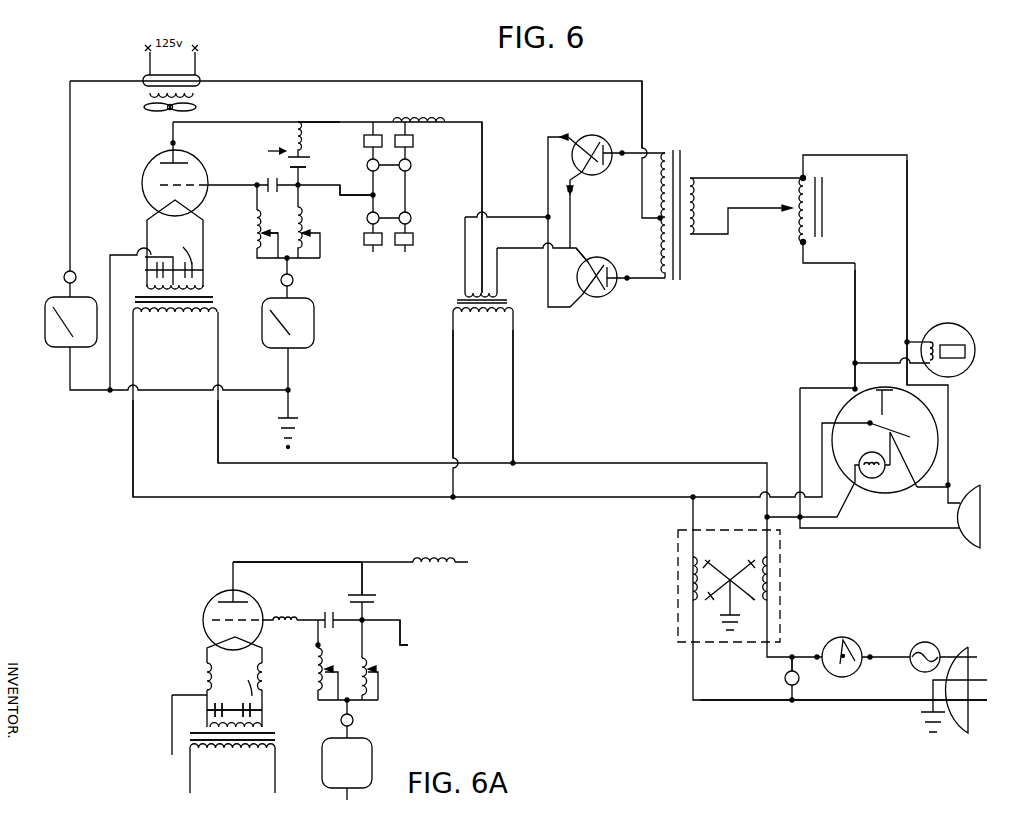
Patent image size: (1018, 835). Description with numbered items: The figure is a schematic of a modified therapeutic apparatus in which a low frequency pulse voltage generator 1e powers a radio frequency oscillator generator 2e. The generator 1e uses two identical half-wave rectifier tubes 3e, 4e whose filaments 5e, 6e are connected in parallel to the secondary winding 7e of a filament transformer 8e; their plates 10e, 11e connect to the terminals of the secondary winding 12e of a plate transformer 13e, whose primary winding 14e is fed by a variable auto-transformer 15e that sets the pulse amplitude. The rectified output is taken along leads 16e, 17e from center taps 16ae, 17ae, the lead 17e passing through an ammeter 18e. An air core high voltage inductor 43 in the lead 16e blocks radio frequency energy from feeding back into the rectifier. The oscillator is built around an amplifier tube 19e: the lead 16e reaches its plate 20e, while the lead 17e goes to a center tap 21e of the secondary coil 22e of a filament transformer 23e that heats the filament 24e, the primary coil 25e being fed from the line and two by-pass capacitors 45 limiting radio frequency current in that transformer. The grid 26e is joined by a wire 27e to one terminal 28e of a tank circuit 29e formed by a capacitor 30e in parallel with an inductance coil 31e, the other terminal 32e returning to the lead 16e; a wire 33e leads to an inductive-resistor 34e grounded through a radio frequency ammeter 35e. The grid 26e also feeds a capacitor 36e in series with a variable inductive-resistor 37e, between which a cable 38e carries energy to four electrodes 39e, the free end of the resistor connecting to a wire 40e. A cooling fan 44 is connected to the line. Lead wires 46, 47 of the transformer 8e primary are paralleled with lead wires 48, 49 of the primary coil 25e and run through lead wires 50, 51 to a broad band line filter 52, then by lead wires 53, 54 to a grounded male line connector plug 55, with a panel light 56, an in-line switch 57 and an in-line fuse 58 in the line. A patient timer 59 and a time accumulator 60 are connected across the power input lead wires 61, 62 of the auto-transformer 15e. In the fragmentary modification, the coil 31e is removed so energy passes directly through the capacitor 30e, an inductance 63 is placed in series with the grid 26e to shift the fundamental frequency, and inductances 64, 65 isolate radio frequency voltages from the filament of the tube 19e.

In FIG. 6, the low frequency pulse voltage generator 1e is at (717, 192).
In FIG. 6, the oscillator generator 2e is at (331, 181).
In FIG. 6, the half-wave rectifier tube 3e is at (609, 149).
In FIG. 6, the half-wave rectifier tube 4e is at (620, 285).
In FIG. 6, the filament 5e is at (616, 151).
In FIG. 6, the filament 6e is at (588, 251).
In FIG. 6, the secondary winding 7e is at (465, 293).
In FIG. 6, the filament transformer 8e is at (450, 310).
In FIG. 6, the plate 10e is at (598, 166).
In FIG. 6, the plate 11e is at (598, 290).
In FIG. 6, the secondary winding 12e is at (662, 248).
In FIG. 6, the plate transformer 13e is at (707, 211).
In FIG. 6, the primary winding 14e is at (698, 201).
In FIG. 6, the variable auto-transformer 15e is at (797, 241).
In FIG. 6, the lead 16e is at (483, 190).
In FIG. 6A, the lead 16e is at (300, 562).
In FIG. 6, the center tap 16ae is at (487, 295).
In FIG. 6, the lead 17e is at (643, 99).
In FIG. 6, the center tap 17ae is at (656, 225).
In FIG. 6, the ammeter 18e is at (45, 325).
In FIG. 6, the amplifier tube 19e is at (166, 204).
In FIG. 6A, the amplifier tube 19e is at (220, 612).
In FIG. 6, the plate 20e is at (186, 165).
In FIG. 6A, the plate 20e is at (245, 600).
In FIG. 6, the center tap 21e is at (147, 286).
In FIG. 6, the secondary coil 22e is at (205, 286).
In FIG. 6, the filament transformer 23e is at (216, 301).
In FIG. 6A, the filament transformer 23e is at (279, 741).
In FIG. 6, the filament 24e is at (165, 202).
In FIG. 6A, the filament 24e is at (215, 646).
In FIG. 6, the primary coil 25e is at (182, 318).
In FIG. 6, the grid 26e is at (162, 183).
In FIG. 6A, the grid 26e is at (215, 622).
In FIG. 6, the wire 27e is at (255, 203).
In FIG. 6A, the wire 27e is at (313, 655).
In FIG. 6, the tank circuit terminal 28e is at (298, 174).
In FIG. 6A, the tank circuit terminal 28e is at (372, 616).
In FIG. 6, the tank circuit 29e is at (255, 141).
In FIG. 6, the capacitor 30e is at (310, 161).
In FIG. 6A, the capacitor 30e is at (372, 601).
In FIG. 6, the inductance coil 31e is at (292, 141).
In FIG. 6, the tank circuit terminal 32e is at (303, 124).
In FIG. 6A, the tank circuit terminal 32e is at (364, 574).
In FIG. 6, the wire 33e is at (274, 222).
In FIG. 6, the inductive-resistor 34e is at (257, 236).
In FIG. 6, the radio frequency ammeter 35e is at (314, 338).
In FIG. 6A, the radio frequency ammeter 35e is at (373, 750).
In FIG. 6, the capacitor 36e is at (268, 181).
In FIG. 6, the variable inductive-resistor 37e is at (304, 216).
In FIG. 6A, the variable inductive-resistor 37e is at (366, 665).
In FIG. 6, the cable 38e is at (356, 183).
In FIG. 6A, the cable 38e is at (418, 640).
In FIG. 6, the electrode 39e is at (365, 136).
In FIG. 6, the wire 40e is at (294, 273).
In FIG. 6A, the wire 40e is at (355, 719).
In FIG. 6, the air core high voltage inductor 43 is at (428, 120).
In FIG. 6A, the air core high voltage inductor 43 is at (435, 562).
In FIG. 6, the cooling fan 44 is at (141, 107).
In FIG. 6, the by-pass capacitors 45 is at (170, 266).
In FIG. 6A, the by-pass capacitors 45 is at (235, 706).
In FIG. 6, the lead wire 46 is at (452, 376).
In FIG. 6, the lead wire 47 is at (515, 379).
In FIG. 6, the lead wire 48 is at (135, 432).
In FIG. 6, the lead wire 49 is at (220, 428).
In FIG. 6, the lead wire 50 is at (607, 497).
In FIG. 6, the lead wire 51 is at (632, 463).
In FIG. 6, the broad band line filter 52 is at (677, 592).
In FIG. 6, the lead wire 53 is at (743, 700).
In FIG. 6, the lead wire 54 is at (793, 656).
In FIG. 6, the male line connector plug 55 is at (964, 710).
In FIG. 6, the panel light 56 is at (800, 679).
In FIG. 6, the in-line switch 57 is at (858, 643).
In FIG. 6, the in-line fuse 58 is at (936, 645).
In FIG. 6, the patient timer 59 is at (880, 497).
In FIG. 6, the time accumulator 60 is at (958, 325).
In FIG. 6, the power input lead wire 61 is at (855, 308).
In FIG. 6, the power input lead wire 62 is at (908, 273).
In FIG. 6A, the inductance 63 is at (285, 617).
In FIG. 6A, the inductance 64 is at (204, 676).
In FIG. 6A, the inductance 65 is at (268, 677).